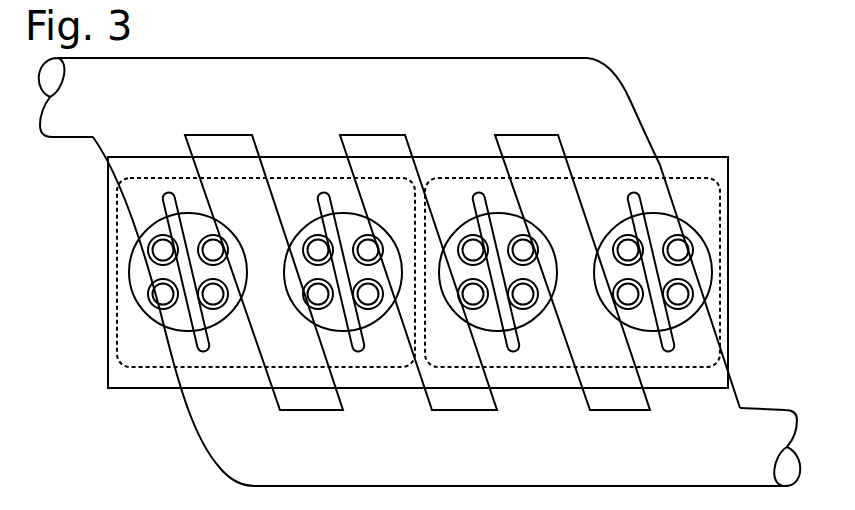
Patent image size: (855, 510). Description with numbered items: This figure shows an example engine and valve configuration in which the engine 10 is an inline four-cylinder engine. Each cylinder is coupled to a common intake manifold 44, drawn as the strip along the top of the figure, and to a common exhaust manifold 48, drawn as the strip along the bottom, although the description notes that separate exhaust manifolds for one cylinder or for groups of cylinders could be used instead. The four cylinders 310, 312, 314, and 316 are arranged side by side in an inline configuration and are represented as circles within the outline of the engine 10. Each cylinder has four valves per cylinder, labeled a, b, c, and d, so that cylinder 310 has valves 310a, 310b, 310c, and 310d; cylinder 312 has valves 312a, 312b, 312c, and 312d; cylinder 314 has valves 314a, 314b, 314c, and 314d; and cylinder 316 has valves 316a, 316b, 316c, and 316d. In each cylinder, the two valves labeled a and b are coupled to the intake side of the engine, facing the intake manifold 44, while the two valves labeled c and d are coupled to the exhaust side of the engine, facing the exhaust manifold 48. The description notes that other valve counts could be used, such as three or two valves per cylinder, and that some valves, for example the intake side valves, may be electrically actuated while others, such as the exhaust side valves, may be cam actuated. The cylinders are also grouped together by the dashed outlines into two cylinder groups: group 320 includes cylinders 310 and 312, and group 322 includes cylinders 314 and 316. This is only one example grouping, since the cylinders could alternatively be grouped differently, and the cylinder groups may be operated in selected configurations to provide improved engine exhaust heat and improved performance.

The engine 10 is at (694, 157).
The common intake manifold 44 is at (347, 104).
The common exhaust manifold 48 is at (477, 458).
The cylinder group 320 is at (167, 178).
The cylinder group 322 is at (477, 178).
The cylinder 310 is at (169, 271).
The valve 310a is at (161, 250).
The valve 310b is at (214, 251).
The valve 310c is at (161, 295).
The valve 310d is at (215, 294).
The cylinder 312 is at (336, 305).
The valve 312a is at (317, 248).
The valve 312b is at (370, 252).
The valve 312c is at (318, 296).
The valve 312d is at (370, 294).
The cylinder 314 is at (491, 304).
The valve 314a is at (472, 248).
The valve 314b is at (525, 252).
The valve 314c is at (473, 296).
The valve 314d is at (525, 294).
The cylinder 316 is at (661, 273).
The valve 316a is at (627, 248).
The valve 316b is at (679, 250).
The valve 316c is at (628, 296).
The valve 316d is at (679, 295).